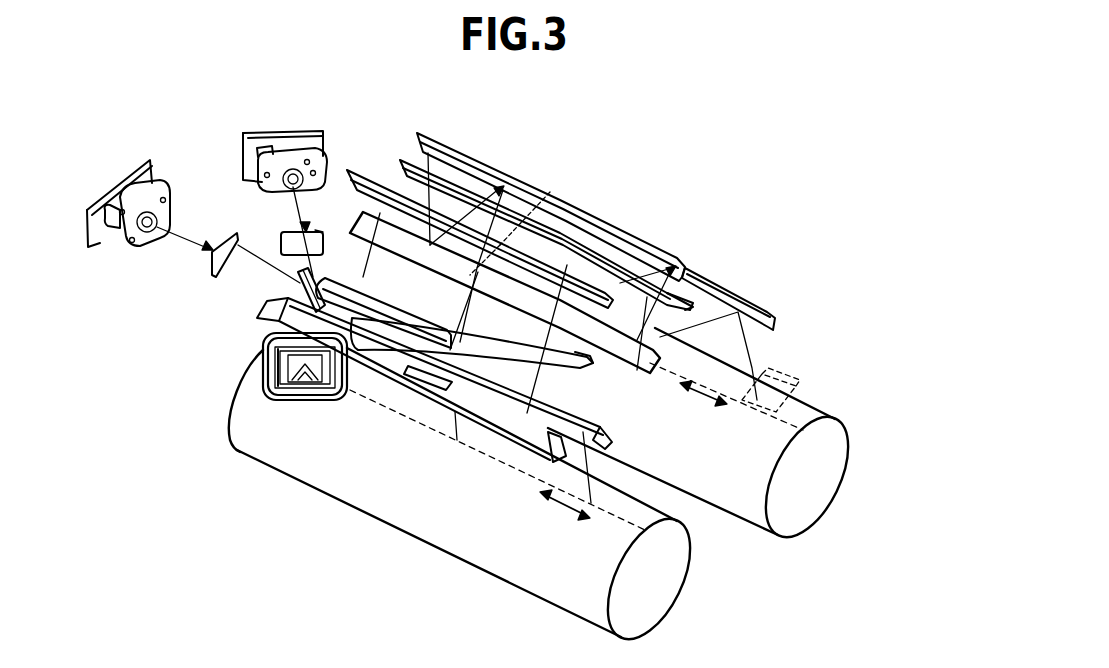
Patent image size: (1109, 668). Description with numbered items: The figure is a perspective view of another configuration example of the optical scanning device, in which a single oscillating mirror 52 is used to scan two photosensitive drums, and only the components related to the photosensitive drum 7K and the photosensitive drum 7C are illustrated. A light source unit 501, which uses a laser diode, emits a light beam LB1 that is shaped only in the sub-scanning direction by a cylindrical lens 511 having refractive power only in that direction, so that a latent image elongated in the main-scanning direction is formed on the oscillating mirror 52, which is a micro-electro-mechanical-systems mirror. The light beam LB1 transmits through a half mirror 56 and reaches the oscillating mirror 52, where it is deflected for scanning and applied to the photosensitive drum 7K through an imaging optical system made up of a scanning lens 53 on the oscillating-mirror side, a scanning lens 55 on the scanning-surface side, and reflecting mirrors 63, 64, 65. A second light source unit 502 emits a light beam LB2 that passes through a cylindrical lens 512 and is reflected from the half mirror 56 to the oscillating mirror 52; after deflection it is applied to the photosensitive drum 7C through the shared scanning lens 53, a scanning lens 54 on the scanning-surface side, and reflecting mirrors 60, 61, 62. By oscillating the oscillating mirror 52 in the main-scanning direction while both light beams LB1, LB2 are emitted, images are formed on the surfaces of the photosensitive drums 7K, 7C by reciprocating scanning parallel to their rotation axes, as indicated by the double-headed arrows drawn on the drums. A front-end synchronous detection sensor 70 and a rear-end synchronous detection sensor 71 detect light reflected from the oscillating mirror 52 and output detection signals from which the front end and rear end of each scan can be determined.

The photosensitive drum 7C is at (660, 597).
The photosensitive drum 7K is at (820, 487).
The light source unit 501 is at (298, 140).
The light source unit 502 is at (123, 173).
The cylindrical lens 511 is at (280, 240).
The cylindrical lens 512 is at (213, 267).
The oscillating mirror 52 is at (258, 349).
The scanning lens 53 is at (345, 258).
The scanning lens 54 is at (560, 363).
The scanning lens 55 is at (500, 205).
The half mirror 56 is at (297, 297).
The reflecting mirror 60 is at (460, 213).
The reflecting mirror 61 is at (258, 314).
The reflecting mirror 62 is at (613, 432).
The reflecting mirror 63 is at (597, 210).
The reflecting mirror 64 is at (637, 370).
The reflecting mirror 65 is at (758, 307).
The front-end synchronous detection sensor 70 is at (550, 192).
The rear-end synchronous detection sensor 71 is at (797, 373).
The light beam LB1 is at (293, 203).
The light beam LB2 is at (196, 247).